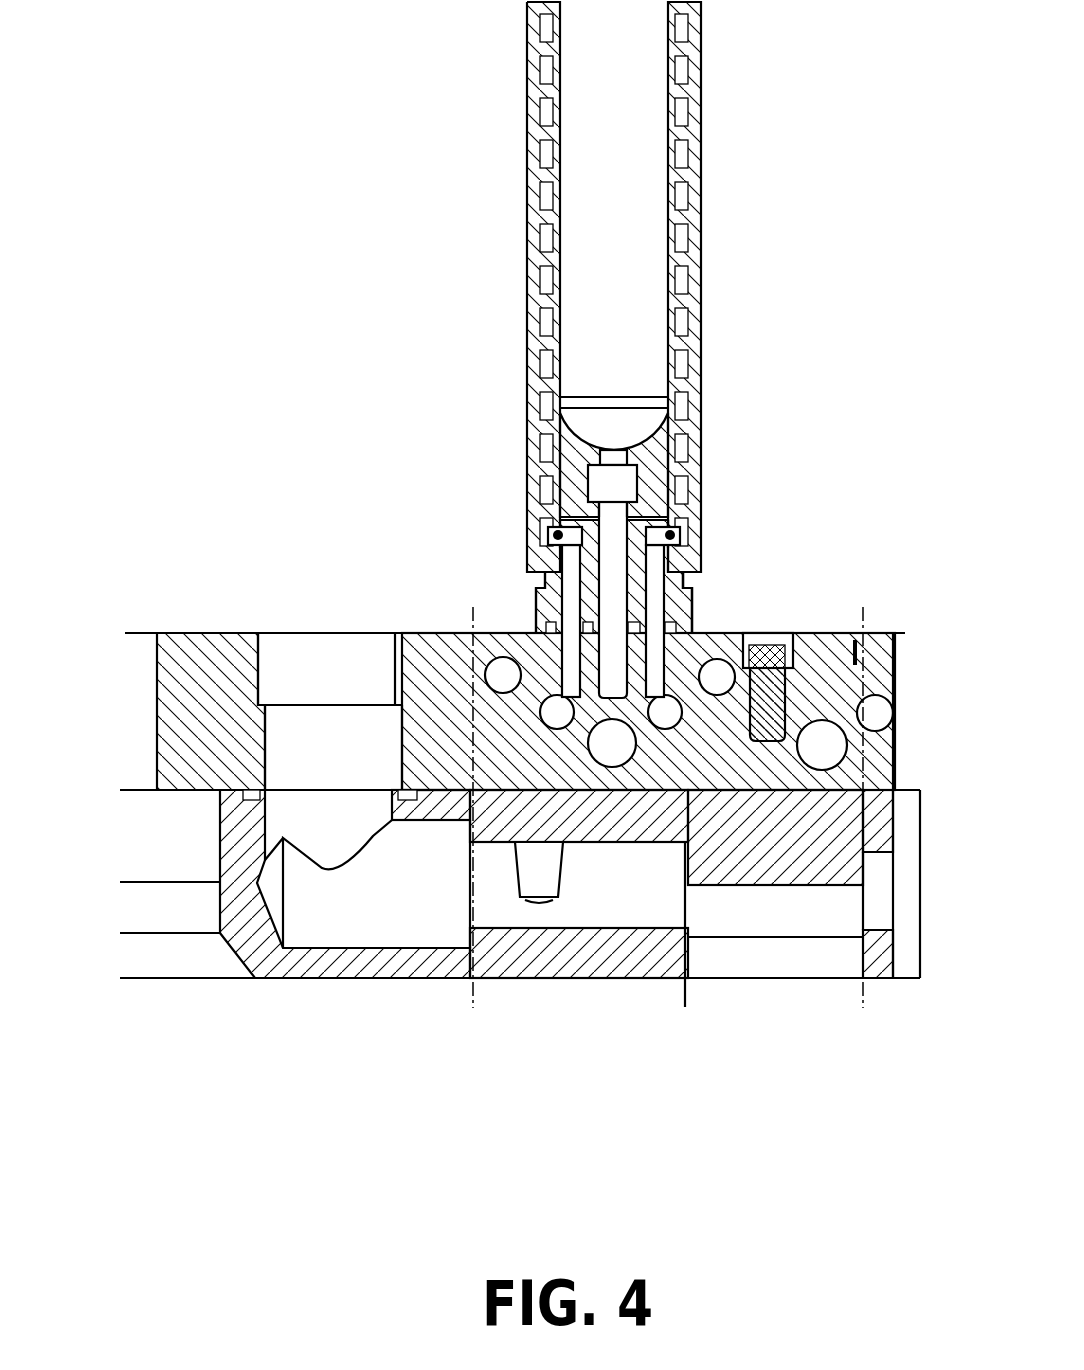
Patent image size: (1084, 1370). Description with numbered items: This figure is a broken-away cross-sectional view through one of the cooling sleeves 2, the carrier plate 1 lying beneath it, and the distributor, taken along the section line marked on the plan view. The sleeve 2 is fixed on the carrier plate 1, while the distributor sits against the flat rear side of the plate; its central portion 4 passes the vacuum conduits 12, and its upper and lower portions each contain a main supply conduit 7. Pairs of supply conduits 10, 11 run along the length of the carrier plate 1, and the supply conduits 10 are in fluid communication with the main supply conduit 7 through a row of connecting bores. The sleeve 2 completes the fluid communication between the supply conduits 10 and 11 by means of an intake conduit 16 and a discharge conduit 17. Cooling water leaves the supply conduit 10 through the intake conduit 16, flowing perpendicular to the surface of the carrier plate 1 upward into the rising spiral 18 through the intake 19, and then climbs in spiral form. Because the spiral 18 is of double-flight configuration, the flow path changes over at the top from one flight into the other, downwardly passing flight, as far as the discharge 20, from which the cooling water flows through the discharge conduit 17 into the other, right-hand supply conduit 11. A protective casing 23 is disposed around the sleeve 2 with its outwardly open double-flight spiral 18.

The carrier plate 1 is at (202, 672).
The sleeve 2 is at (676, 174).
The central portion 4 is at (921, 889).
The main supply conduit 7 is at (713, 915).
The supply conduit 10 is at (545, 707).
The supply conduit 11 is at (667, 715).
The vacuum conduit 12 is at (607, 747).
The intake conduit 16 is at (568, 623).
The discharge conduit 17 is at (653, 612).
The rising spiral 18 is at (542, 363).
The intake 19 is at (548, 512).
The discharge 20 is at (665, 534).
The protective casing 23 is at (697, 312).